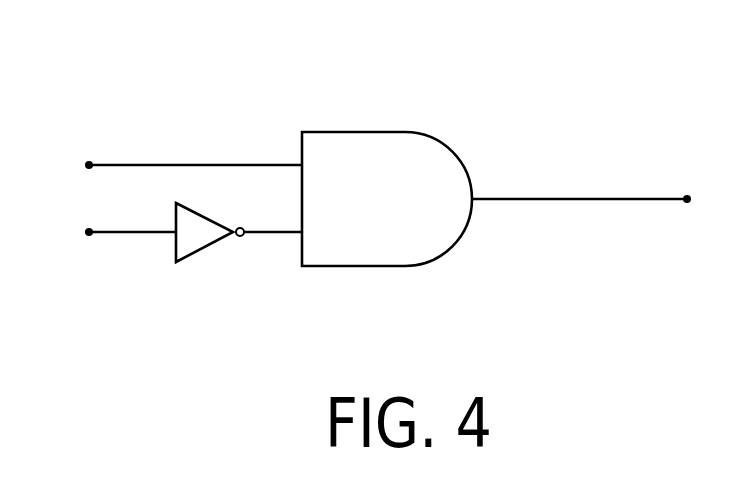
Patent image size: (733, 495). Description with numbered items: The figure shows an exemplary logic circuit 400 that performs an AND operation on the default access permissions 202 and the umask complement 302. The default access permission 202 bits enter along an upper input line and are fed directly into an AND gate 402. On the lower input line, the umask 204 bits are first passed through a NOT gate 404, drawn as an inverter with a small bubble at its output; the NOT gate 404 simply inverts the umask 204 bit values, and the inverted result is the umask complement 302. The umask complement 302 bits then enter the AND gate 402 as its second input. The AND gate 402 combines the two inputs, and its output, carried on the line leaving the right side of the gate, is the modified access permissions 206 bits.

The logic circuit 400 is at (392, 61).
The AND gate 402 is at (388, 130).
The default access permissions 202 is at (108, 164).
The umask 204 is at (108, 231).
The NOT gate 404 is at (204, 213).
The umask complement 302 is at (283, 236).
The modified access permissions 206 is at (672, 197).